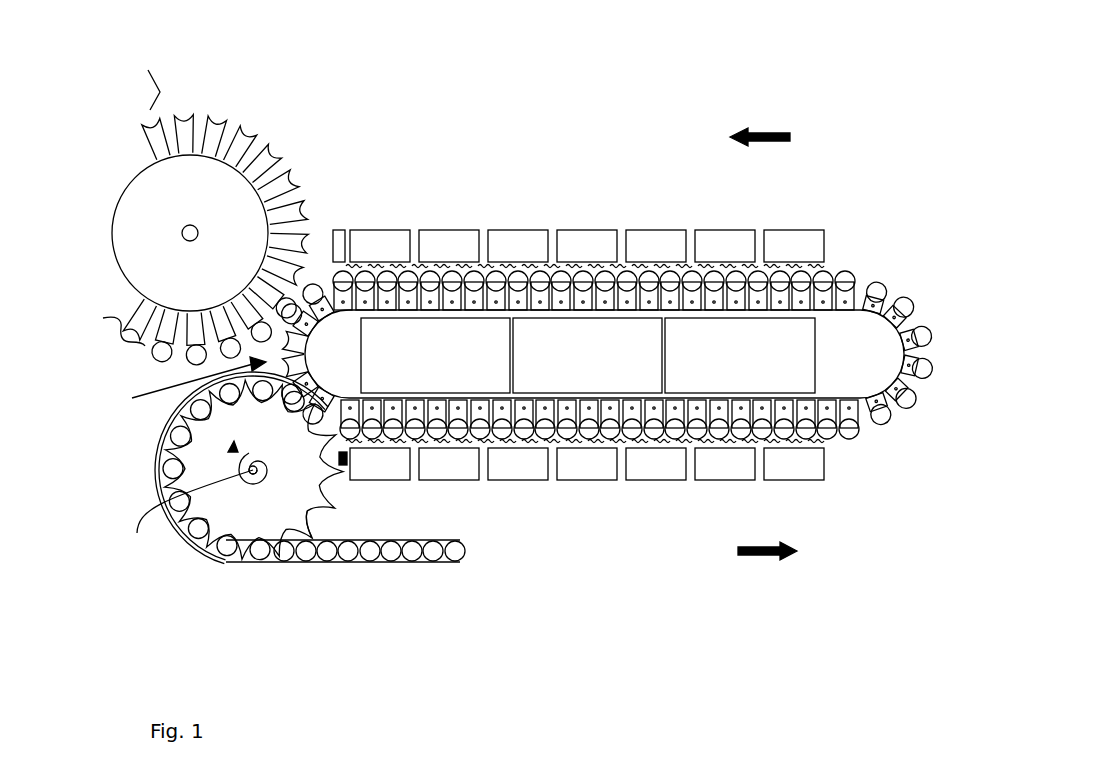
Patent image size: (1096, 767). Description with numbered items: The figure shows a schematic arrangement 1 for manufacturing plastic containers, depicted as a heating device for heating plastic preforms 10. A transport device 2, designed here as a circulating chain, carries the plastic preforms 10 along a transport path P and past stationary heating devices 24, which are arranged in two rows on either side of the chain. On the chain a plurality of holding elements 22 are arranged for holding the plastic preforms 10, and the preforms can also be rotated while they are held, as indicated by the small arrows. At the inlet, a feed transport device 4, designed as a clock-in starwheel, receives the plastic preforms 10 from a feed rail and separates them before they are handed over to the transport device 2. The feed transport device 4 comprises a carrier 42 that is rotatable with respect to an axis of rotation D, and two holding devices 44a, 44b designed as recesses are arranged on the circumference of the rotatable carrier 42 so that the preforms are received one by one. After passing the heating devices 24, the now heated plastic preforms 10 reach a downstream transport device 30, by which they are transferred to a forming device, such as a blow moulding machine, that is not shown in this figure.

The arrangement for manufacturing plastic containers 1 is at (642, 120).
The transport device 2 is at (858, 364).
The feed transport device 4 is at (198, 574).
The plastic preforms 10 is at (883, 418).
The holding elements 22 is at (886, 318).
The stationary heating devices 24 is at (390, 239).
The downstream transport device 30 is at (242, 92).
The carrier 42 is at (225, 513).
The holding device 44a is at (313, 513).
The holding device 44b is at (296, 538).
The axis of rotation D is at (190, 515).
The transport path P is at (763, 347).